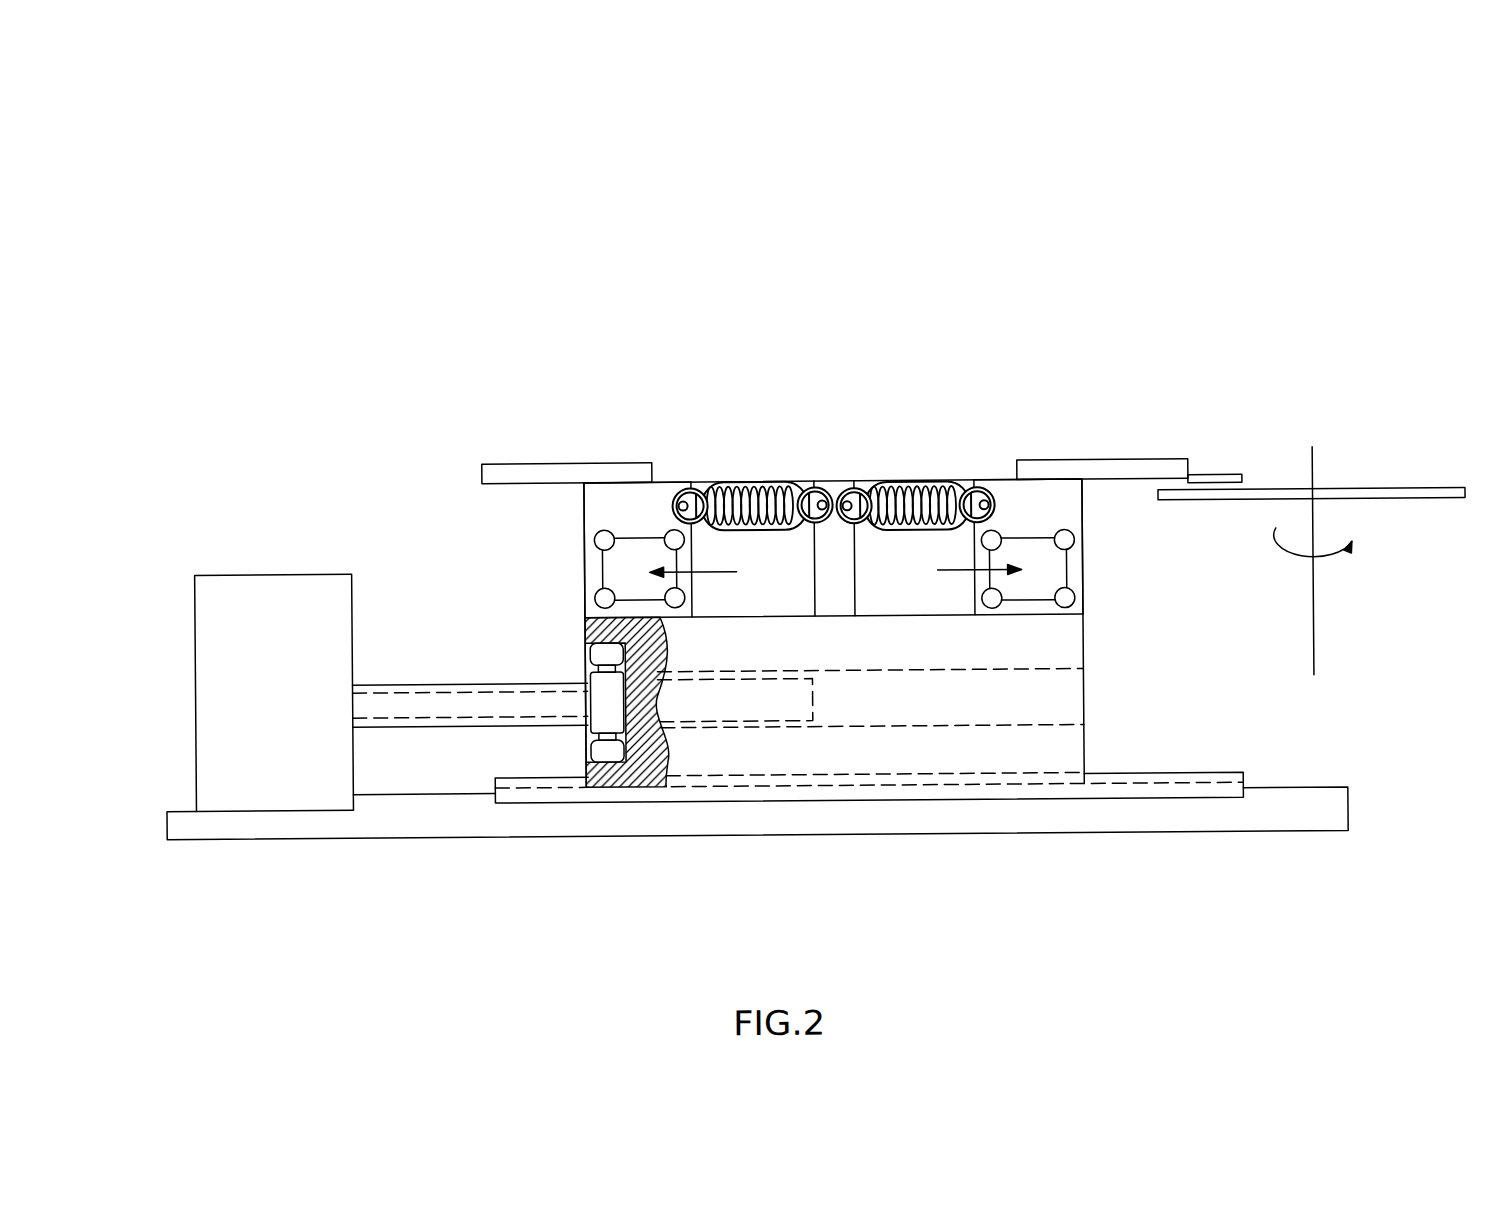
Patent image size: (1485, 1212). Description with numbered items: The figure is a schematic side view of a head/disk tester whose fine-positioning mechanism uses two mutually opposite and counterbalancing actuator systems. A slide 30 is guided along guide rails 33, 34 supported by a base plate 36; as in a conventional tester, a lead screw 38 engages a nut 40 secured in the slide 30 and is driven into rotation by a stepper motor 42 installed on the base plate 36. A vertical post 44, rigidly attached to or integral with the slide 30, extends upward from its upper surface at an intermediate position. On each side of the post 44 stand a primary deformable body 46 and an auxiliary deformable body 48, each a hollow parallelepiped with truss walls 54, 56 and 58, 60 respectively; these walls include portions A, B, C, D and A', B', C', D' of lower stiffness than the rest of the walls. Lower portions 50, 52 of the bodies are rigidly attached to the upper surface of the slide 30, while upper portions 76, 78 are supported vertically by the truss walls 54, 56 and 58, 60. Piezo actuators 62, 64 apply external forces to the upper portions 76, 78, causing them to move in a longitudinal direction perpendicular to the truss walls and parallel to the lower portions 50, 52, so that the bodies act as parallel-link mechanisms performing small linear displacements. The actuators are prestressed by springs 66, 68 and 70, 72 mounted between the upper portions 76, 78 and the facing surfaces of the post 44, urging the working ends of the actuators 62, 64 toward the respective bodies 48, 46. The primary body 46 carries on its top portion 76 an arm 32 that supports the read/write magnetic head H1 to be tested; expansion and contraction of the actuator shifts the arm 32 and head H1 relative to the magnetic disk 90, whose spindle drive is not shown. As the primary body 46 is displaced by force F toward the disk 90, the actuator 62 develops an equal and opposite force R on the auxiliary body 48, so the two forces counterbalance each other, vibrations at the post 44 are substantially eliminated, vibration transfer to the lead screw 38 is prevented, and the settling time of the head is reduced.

The slide 30 is at (980, 698).
The arm 32 is at (1139, 471).
The guide rail 33 is at (932, 875).
The guide rail 34 is at (1191, 793).
The base plate 36 is at (1311, 802).
The lead screw 38 is at (459, 698).
The nut 40 is at (596, 701).
The stepper motor 42 is at (257, 619).
The vertical post 44 is at (836, 484).
The primary deformable body 46 is at (918, 337).
The auxiliary deformable body 48 is at (643, 436).
The lower portion 50 is at (632, 612).
The lower portion 52 is at (1085, 632).
The truss wall 54 is at (688, 564).
The truss wall 56 is at (536, 506).
The truss wall 58 is at (1097, 462).
The truss wall 60 is at (1085, 568).
The piezo actuator 62 is at (805, 603).
The piezo actuator 64 is at (956, 619).
The spring 66 is at (806, 696).
The spring 68 is at (763, 515).
The spring 70 is at (956, 711).
The spring 72 is at (903, 526).
The upper portion 76 is at (1038, 510).
The upper portion 78 is at (643, 452).
The magnetic disk 90 is at (1356, 494).
The read/write magnetic head H1 is at (1228, 478).